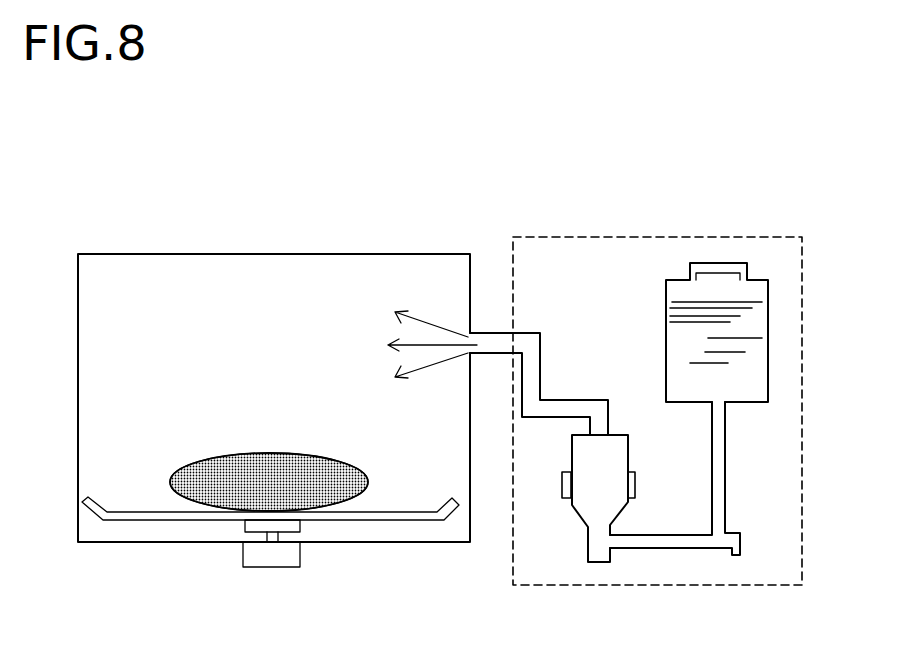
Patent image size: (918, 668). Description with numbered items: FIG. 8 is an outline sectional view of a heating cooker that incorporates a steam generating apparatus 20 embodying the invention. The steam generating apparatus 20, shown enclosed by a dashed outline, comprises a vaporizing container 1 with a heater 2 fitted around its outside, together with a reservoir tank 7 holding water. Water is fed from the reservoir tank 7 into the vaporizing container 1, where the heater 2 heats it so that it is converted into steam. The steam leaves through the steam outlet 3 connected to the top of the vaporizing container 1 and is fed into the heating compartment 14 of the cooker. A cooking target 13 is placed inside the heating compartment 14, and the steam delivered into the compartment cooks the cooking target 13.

The vaporizing container 1 is at (586, 503).
The heater 2 is at (563, 488).
The steam outlet 3 is at (587, 400).
The reservoir tank 7 is at (667, 282).
The cooking target 13 is at (257, 493).
The heating compartment 14 is at (232, 253).
The steam generating apparatus 20 is at (770, 237).